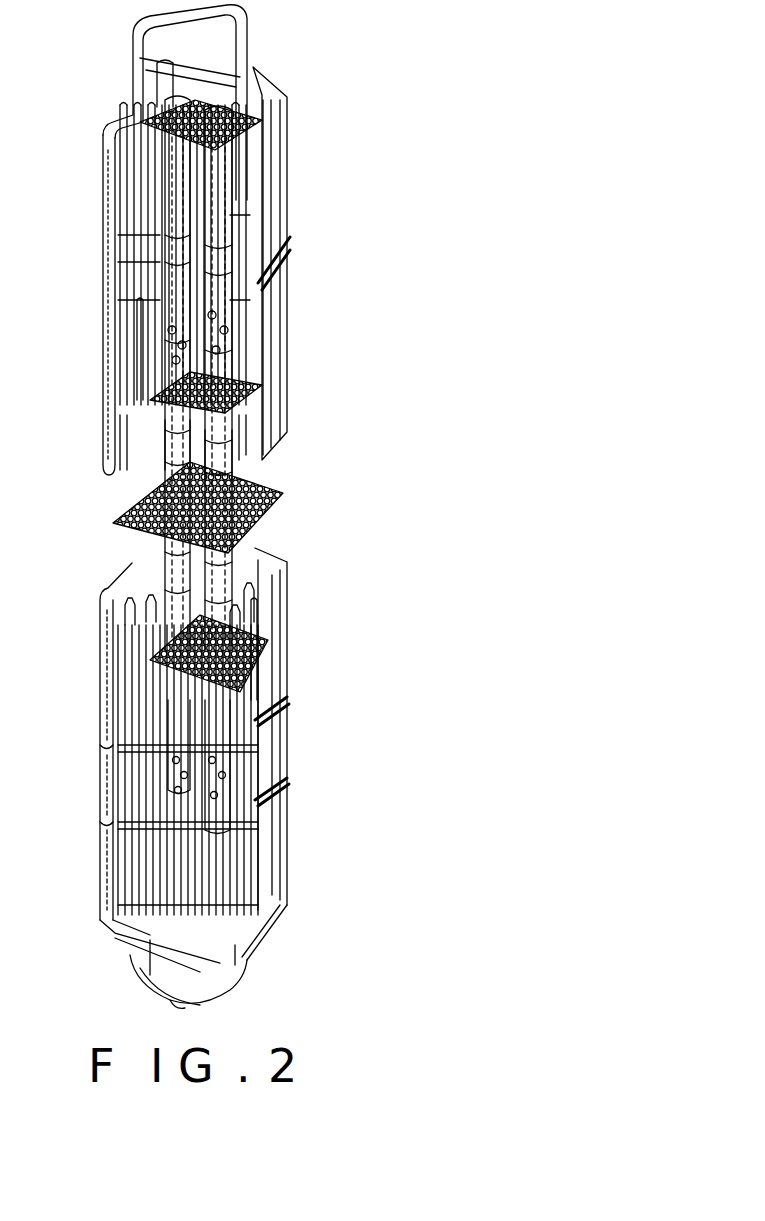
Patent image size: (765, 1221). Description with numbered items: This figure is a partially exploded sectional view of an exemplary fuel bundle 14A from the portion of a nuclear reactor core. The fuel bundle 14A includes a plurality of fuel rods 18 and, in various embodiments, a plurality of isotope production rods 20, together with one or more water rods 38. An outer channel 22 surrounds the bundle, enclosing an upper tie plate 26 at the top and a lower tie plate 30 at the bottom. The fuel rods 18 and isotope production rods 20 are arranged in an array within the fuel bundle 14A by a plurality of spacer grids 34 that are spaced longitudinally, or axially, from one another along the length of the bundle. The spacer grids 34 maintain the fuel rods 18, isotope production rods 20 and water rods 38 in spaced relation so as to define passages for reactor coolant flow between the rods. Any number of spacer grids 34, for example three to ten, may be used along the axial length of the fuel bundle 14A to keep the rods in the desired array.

The fuel bundle 14A is at (340, 233).
The fuel rods 18 is at (137, 315).
The isotope production rods 20 is at (117, 257).
The outer channel 22 is at (273, 360).
The upper tie plate 26 is at (133, 180).
The lower tie plate 30 is at (235, 945).
The spacer grids 34 is at (137, 405).
The water rods 38 is at (240, 460).